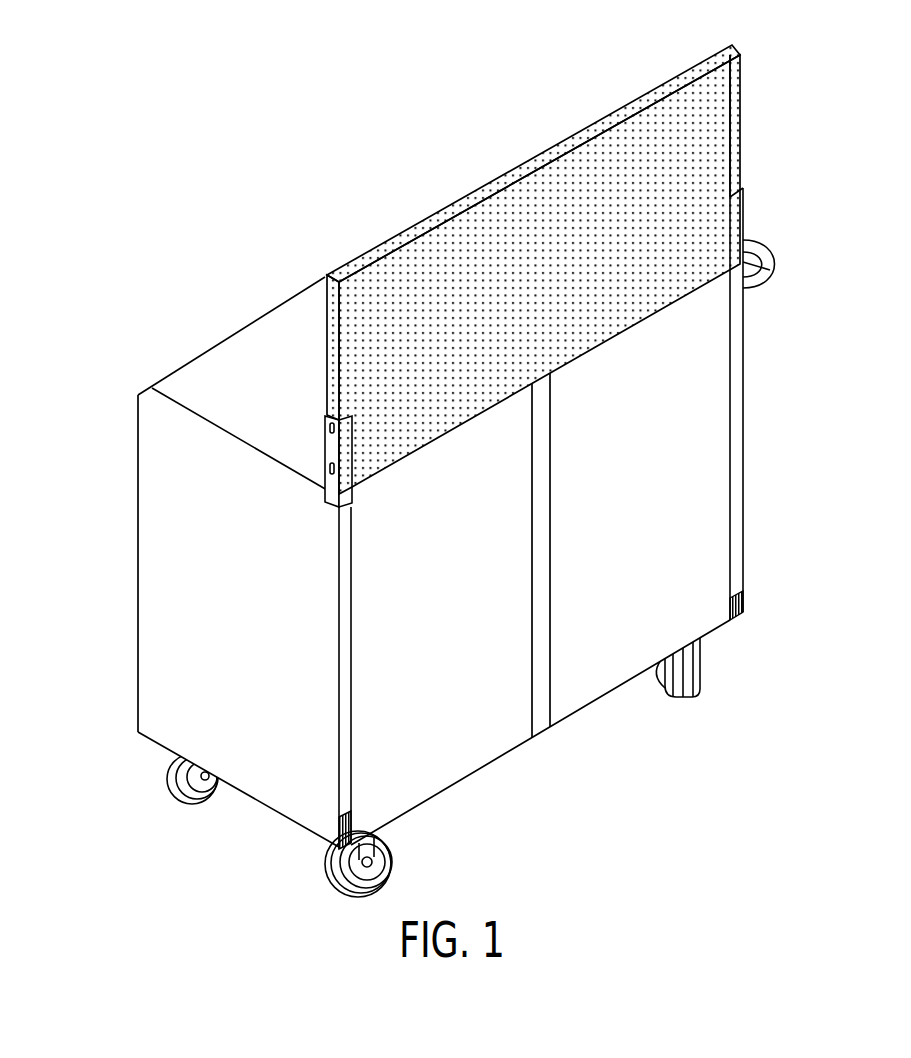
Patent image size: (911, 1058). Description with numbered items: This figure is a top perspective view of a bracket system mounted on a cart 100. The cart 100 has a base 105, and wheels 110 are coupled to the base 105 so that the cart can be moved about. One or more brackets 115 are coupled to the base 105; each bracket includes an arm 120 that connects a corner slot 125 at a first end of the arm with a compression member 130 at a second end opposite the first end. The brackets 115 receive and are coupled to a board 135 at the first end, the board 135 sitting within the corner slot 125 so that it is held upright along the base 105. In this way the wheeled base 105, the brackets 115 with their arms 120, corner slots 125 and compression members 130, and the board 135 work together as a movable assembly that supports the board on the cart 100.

The cart 100 is at (834, 124).
The base 105 is at (155, 582).
The wheels 110 is at (172, 782).
The brackets 115 is at (760, 470).
The arm 120 is at (737, 548).
The corner slot 125 is at (737, 228).
The compression member 130 is at (737, 620).
The board 135 is at (513, 173).